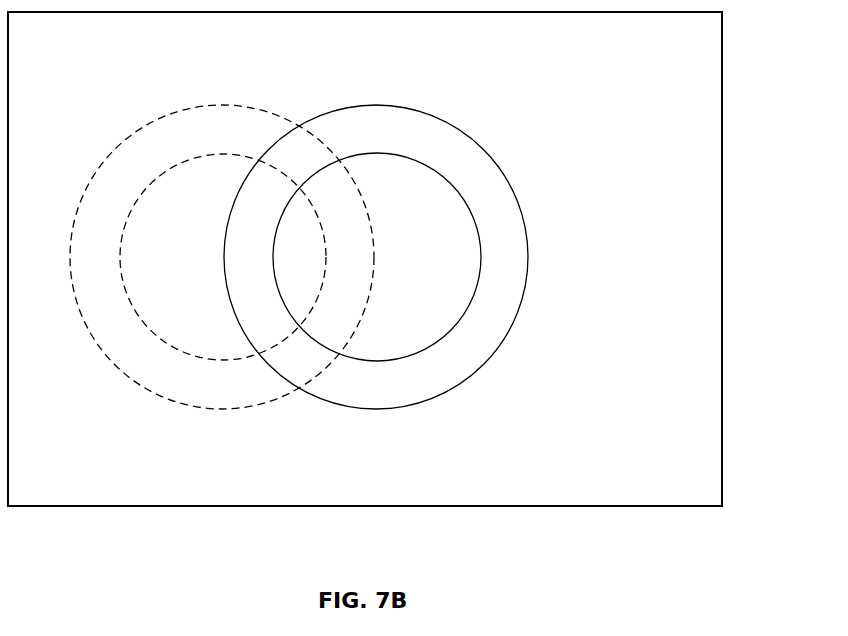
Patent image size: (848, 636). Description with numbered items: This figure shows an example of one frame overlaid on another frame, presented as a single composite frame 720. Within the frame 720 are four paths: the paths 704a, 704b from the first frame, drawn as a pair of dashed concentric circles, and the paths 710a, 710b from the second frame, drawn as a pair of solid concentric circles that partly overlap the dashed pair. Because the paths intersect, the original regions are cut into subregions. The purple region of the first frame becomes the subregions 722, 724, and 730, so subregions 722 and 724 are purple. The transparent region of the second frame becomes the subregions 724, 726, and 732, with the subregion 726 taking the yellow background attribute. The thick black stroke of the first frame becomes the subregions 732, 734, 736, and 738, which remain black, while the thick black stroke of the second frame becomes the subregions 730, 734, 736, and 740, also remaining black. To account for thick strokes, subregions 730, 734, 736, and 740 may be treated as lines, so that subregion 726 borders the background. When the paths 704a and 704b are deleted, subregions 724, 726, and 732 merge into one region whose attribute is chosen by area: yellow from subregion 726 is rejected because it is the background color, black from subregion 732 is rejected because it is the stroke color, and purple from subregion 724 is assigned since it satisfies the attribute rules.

The frame 720 is at (722, 428).
The path 704a is at (160, 395).
The path 704b is at (155, 337).
The path 710a is at (518, 318).
The path 710b is at (481, 243).
The subregion 722 is at (168, 261).
The subregion 724 is at (300, 261).
The subregion 726 is at (420, 261).
The subregion 730 is at (248, 261).
The subregion 732 is at (353, 261).
The subregion 734 is at (298, 130).
The subregion 736 is at (302, 380).
The subregion 738 is at (131, 164).
The subregion 740 is at (387, 385).